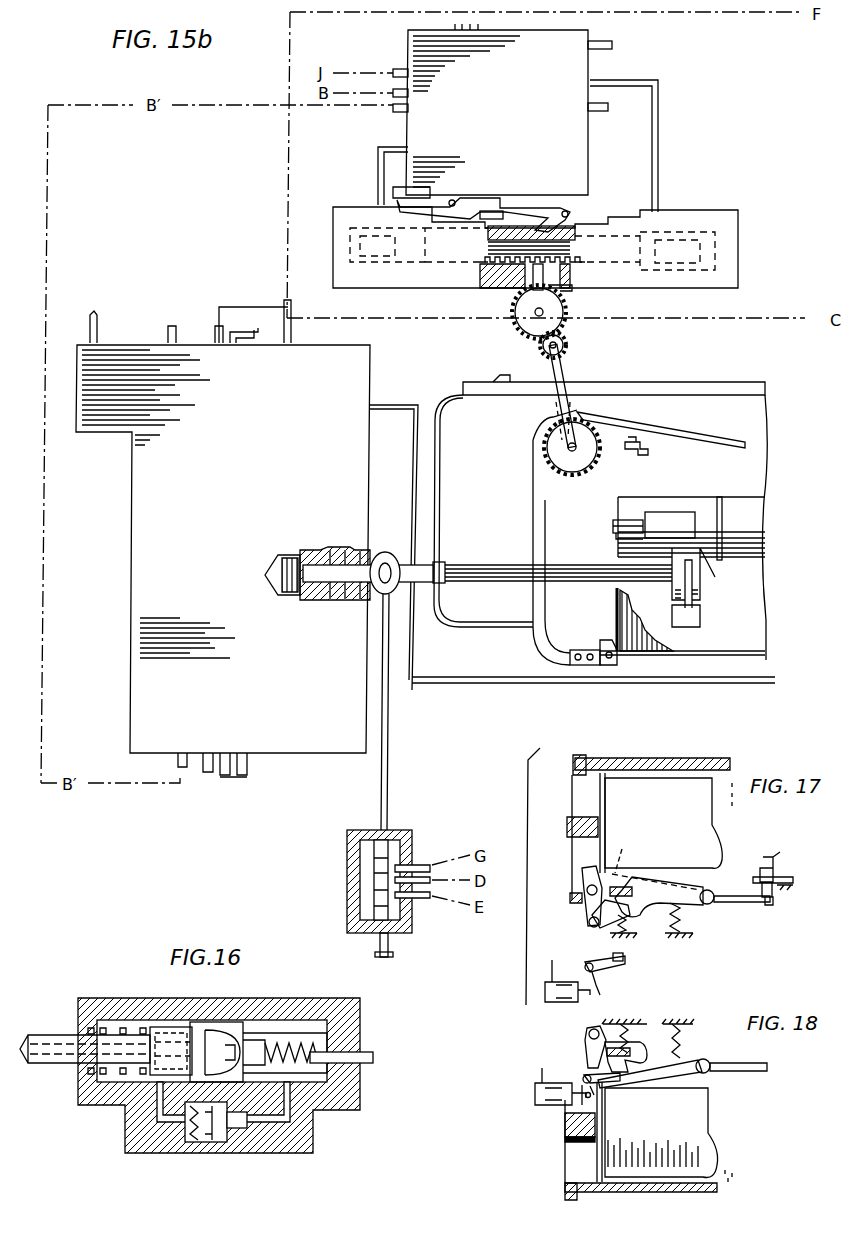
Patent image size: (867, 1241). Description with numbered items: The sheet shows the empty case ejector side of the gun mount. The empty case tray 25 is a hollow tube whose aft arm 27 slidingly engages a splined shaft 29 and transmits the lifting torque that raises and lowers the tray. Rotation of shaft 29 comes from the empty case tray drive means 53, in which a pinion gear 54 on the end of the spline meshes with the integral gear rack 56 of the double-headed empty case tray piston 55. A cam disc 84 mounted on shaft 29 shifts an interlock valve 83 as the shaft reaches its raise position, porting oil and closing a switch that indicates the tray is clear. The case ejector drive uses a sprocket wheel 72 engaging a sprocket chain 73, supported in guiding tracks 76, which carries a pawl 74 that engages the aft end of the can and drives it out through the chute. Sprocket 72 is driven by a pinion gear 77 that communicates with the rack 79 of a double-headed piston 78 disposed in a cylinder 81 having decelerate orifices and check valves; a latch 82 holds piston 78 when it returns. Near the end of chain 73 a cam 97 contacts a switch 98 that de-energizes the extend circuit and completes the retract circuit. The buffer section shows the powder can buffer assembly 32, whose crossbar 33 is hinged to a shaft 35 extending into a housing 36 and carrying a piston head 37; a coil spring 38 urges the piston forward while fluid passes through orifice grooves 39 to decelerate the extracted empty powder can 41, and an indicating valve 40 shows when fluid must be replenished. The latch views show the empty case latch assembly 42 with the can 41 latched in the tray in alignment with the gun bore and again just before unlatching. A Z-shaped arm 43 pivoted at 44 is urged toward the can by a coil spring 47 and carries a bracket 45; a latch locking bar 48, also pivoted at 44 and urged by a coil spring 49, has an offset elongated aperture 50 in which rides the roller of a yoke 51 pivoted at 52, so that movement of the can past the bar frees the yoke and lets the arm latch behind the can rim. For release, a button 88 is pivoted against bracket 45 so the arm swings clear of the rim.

In FIG. 15B, the latch 82 is at (566, 232).
In FIG. 15B, the rack 79 is at (497, 240).
In FIG. 15B, the cylinder 81 is at (478, 258).
In FIG. 15B, the pinion gear 77 is at (505, 288).
In FIG. 15B, the double-headed piston 78 is at (575, 245).
In FIG. 15B, the cam 97 is at (495, 378).
In FIG. 15B, the guiding tracks 76 is at (735, 392).
In FIG. 15B, the switch 98 is at (658, 455).
In FIG. 15B, the sprocket wheel 72 is at (577, 470).
In FIG. 15B, the shaft 35 is at (628, 522).
In FIG. 16, the shaft 35 is at (62, 1032).
In FIG. 15B, the empty case tray 25 is at (670, 498).
In FIG. 17, the empty case tray 25 is at (667, 758).
In FIG. 18, the empty case tray 25 is at (658, 1201).
In FIG. 15B, the powder can buffer assembly 32 is at (678, 517).
In FIG. 15B, the arm 27 is at (682, 587).
In FIG. 15B, the splined shaft 29 is at (453, 563).
In FIG. 15B, the empty case tray piston 55 is at (272, 557).
In FIG. 15B, the gear rack 56 is at (290, 548).
In FIG. 15B, the pinion gear 54 is at (312, 548).
In FIG. 15B, the cam disc 84 is at (385, 553).
In FIG. 15B, the empty case tray drive means 53 is at (327, 767).
In FIG. 15B, the interlock valve 83 is at (396, 840).
In FIG. 15B, the sprocket chain 73 is at (578, 668).
In FIG. 15B, the pawl 74 is at (615, 668).
In FIG. 16, the housing 36 is at (271, 1006).
In FIG. 16, the piston head 37 is at (217, 1027).
In FIG. 16, the coil spring 38 is at (132, 1022).
In FIG. 16, the orifice grooves 39 is at (163, 1028).
In FIG. 16, the indicating valve 40 is at (367, 1052).
In FIG. 17, the crossbar 33 is at (570, 822).
In FIG. 18, the crossbar 33 is at (565, 1135).
In FIG. 17, the empty powder can 41 is at (671, 821).
In FIG. 18, the empty powder can 41 is at (666, 1146).
In FIG. 17, the empty case latch assembly 42 is at (740, 861).
In FIG. 18, the empty case latch assembly 42 is at (535, 1091).
In FIG. 17, the Z-shaped arm 43 is at (668, 890).
In FIG. 18, the Z-shaped arm 43 is at (665, 1072).
In FIG. 17, the pivot 44 is at (714, 900).
In FIG. 18, the pivot 44 is at (705, 1060).
In FIG. 17, the bracket 45 is at (625, 888).
In FIG. 18, the bracket 45 is at (623, 1073).
In FIG. 17, the coil spring 47 is at (693, 928).
In FIG. 18, the coil spring 47 is at (685, 1024).
In FIG. 17, the latch locking bar 48 is at (621, 852).
In FIG. 17, the coil spring 49 is at (627, 928).
In FIG. 18, the coil spring 49 is at (640, 1024).
In FIG. 17, the offset elongated aperture 50 is at (585, 878).
In FIG. 17, the yoke 51 is at (598, 930).
In FIG. 18, the yoke 51 is at (589, 1033).
In FIG. 17, the pivot 52 is at (592, 914).
In FIG. 17, the button 88 is at (620, 962).
In FIG. 18, the button 88 is at (588, 1068).